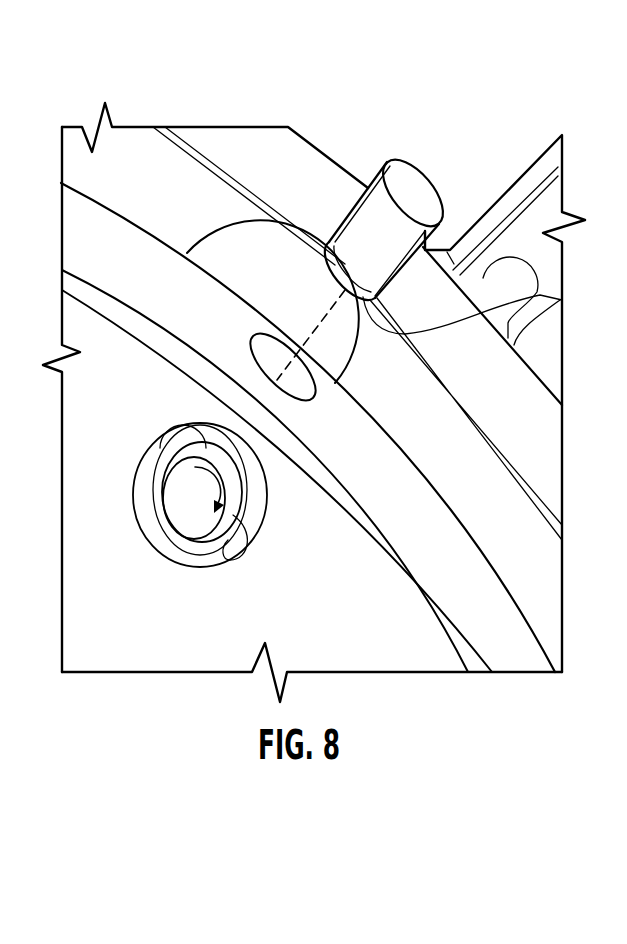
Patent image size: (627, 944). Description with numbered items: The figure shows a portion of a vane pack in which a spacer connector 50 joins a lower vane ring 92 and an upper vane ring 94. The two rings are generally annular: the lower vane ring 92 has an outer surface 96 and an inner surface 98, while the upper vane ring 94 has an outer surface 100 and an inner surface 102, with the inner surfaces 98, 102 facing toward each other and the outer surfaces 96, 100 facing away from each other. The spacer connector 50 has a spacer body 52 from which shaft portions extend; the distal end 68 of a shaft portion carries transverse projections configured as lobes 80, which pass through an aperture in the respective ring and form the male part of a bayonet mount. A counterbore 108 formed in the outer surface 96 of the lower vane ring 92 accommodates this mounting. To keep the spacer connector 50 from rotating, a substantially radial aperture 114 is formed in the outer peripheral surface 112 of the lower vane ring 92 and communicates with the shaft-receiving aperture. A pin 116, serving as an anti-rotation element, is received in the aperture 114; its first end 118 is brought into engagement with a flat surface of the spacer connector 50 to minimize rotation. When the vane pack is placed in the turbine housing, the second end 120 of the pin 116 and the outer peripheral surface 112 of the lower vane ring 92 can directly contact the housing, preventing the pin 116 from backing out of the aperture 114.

The spacer connector 50 is at (217, 234).
The spacer body 52 is at (263, 252).
The distal end 68 is at (168, 527).
The lobes 80 is at (176, 446).
The lower vane ring 92 is at (481, 674).
The upper vane ring 94 is at (548, 445).
The outer surface 96 is at (397, 663).
The inner surface 98 is at (527, 620).
The outer surface 100 is at (543, 390).
The inner surface 102 is at (527, 527).
The counterbore 108 is at (174, 521).
The outer peripheral surface 112 is at (497, 653).
The aperture 114 is at (262, 338).
The pin 116 is at (374, 172).
The first end 118 is at (562, 300).
The second end 120 is at (408, 186).